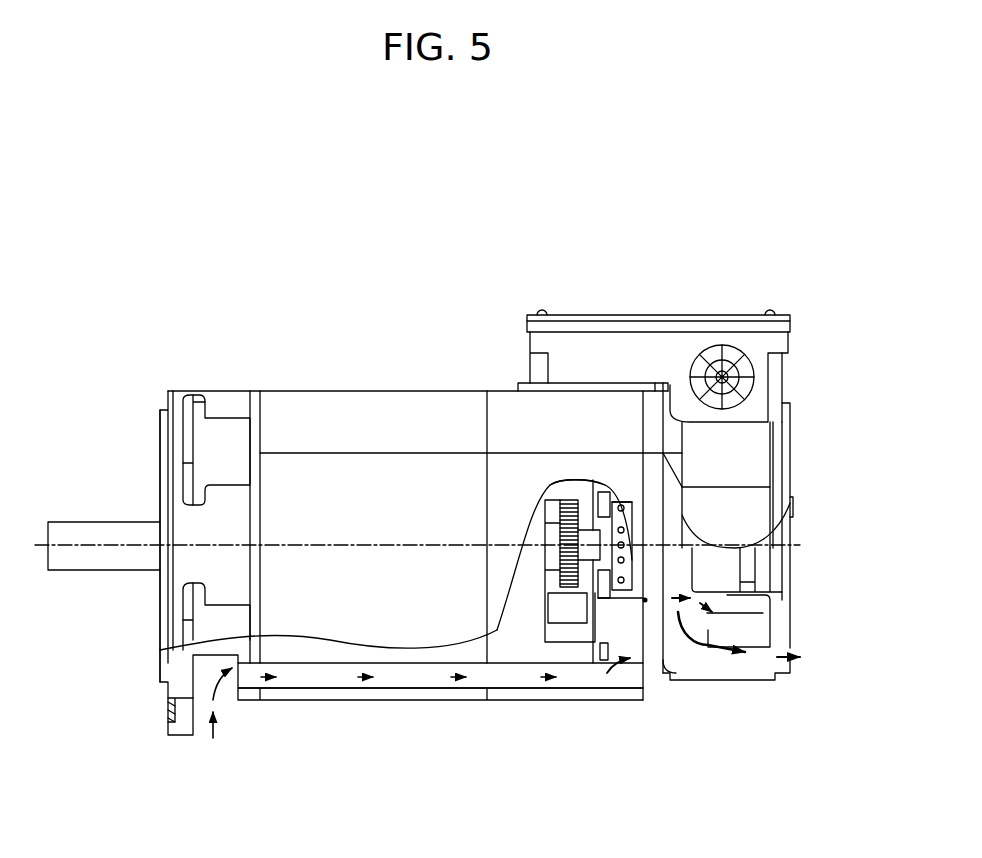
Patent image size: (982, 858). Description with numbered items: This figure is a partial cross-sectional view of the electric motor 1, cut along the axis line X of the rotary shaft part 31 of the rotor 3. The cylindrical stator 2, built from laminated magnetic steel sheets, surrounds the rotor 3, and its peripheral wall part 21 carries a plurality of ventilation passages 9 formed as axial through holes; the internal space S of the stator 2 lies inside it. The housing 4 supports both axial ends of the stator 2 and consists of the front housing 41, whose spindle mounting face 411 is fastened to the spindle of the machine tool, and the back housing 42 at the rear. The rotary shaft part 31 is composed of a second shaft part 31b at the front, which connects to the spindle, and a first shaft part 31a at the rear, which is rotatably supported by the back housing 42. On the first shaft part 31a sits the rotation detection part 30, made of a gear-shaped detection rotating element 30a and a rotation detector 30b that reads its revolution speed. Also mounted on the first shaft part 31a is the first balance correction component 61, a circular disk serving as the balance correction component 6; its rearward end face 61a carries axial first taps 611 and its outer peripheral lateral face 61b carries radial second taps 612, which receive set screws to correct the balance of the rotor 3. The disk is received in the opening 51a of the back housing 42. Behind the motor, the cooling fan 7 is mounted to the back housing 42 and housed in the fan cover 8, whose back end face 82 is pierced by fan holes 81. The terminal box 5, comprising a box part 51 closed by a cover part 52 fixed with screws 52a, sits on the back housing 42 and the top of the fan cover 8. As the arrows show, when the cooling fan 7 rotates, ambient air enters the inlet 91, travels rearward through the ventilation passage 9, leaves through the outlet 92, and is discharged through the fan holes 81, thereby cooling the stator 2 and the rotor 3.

The electric motor 1 is at (580, 170).
The stator 2 is at (379, 391).
The rotor 3 is at (360, 506).
The housing 4 is at (354, 520).
The front housing 41 is at (286, 520).
The back housing 42 is at (505, 405).
The spindle mounting face 411 is at (163, 432).
The rotary shaft part 31 is at (322, 419).
The first shaft part 31a is at (590, 530).
The second shaft part 31b is at (78, 520).
The terminal box 5 is at (679, 365).
The box part 51 is at (623, 347).
The opening 51a is at (593, 480).
The cover part 52 is at (708, 315).
The screws 52a is at (542, 311).
The balance correction component 6 is at (643, 531).
The first balance correction component 61 is at (711, 504).
The end face 61a is at (632, 530).
The outer peripheral lateral face 61b is at (605, 650).
The first taps 611 is at (643, 655).
The second taps 612 is at (617, 503).
The cooling fan 7 is at (735, 572).
The fan cover 8 is at (745, 541).
The fan holes 81 is at (787, 635).
The back end face 82 is at (793, 470).
The ventilation passage 9 is at (410, 684).
The inlet 91 is at (232, 700).
The outlet 92 is at (665, 677).
The peripheral wall part 21 is at (357, 692).
The rotation detection part 30 is at (546, 658).
The detection rotating element 30a is at (570, 590).
The rotation detector 30b is at (553, 612).
The internal space S is at (550, 590).
The axis line X is at (48, 560).